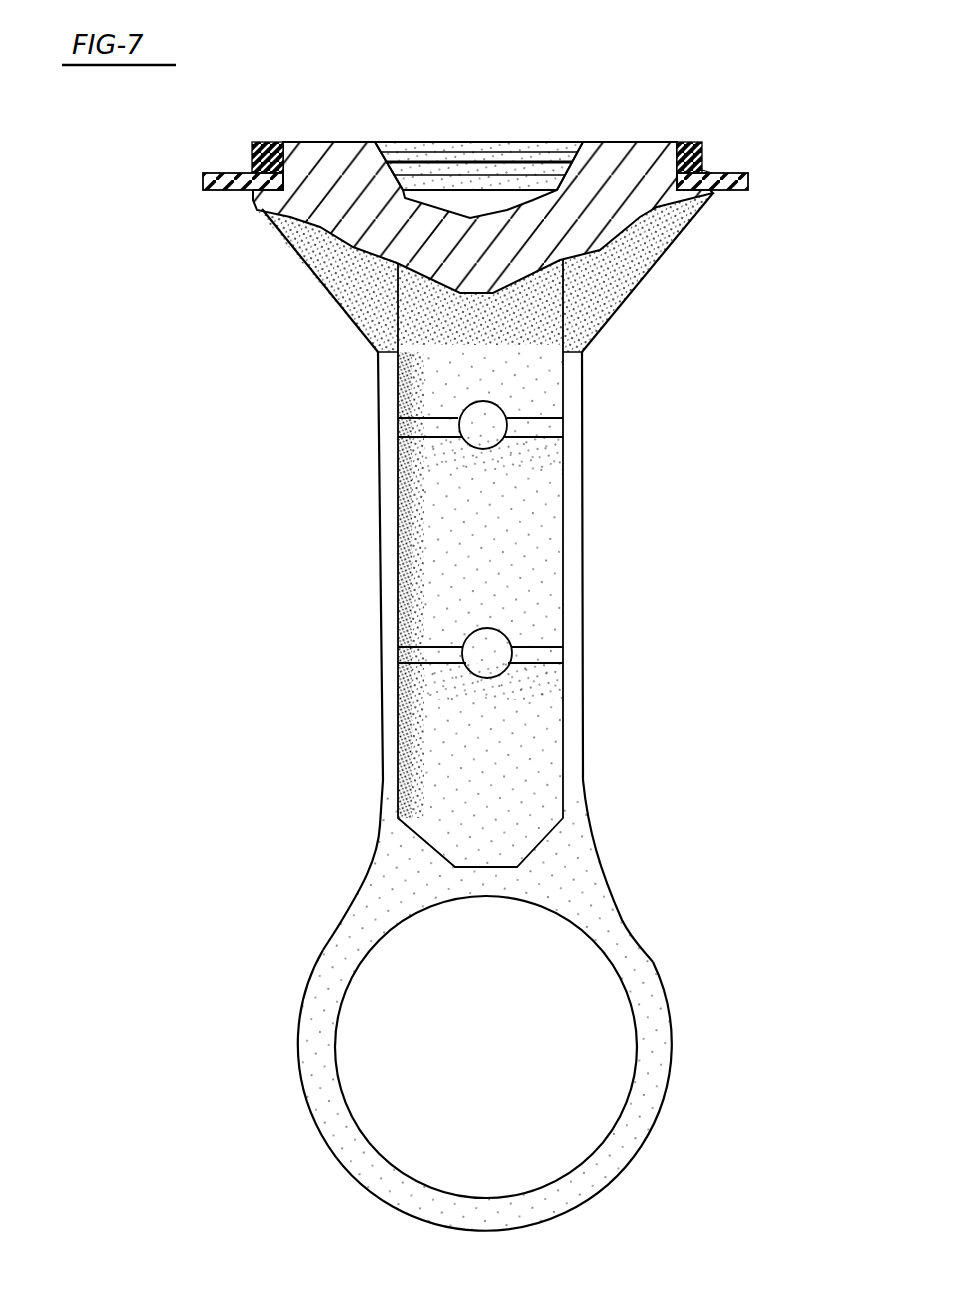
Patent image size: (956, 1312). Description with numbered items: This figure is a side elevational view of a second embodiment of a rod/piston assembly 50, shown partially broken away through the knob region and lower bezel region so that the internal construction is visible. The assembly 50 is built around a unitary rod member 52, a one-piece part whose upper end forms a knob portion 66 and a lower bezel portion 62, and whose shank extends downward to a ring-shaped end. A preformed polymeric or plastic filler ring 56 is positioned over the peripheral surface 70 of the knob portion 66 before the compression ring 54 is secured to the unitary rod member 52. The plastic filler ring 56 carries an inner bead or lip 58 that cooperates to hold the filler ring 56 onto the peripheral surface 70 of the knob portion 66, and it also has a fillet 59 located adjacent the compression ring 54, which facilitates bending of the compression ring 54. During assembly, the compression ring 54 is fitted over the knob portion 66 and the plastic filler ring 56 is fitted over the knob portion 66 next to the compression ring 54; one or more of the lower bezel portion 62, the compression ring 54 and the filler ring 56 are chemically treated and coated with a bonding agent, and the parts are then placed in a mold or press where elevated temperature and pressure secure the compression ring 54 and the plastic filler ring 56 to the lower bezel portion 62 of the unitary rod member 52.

The assembly 50 is at (366, 461).
The unitary rod member 52 is at (597, 227).
The compression ring 54 is at (730, 190).
The plastic filler ring 56 is at (697, 142).
The inner bead 58 is at (470, 160).
The fillet 59 is at (710, 168).
The lower bezel portion 62 is at (255, 197).
The knob portion 66 is at (340, 147).
The peripheral surface 70 is at (294, 142).